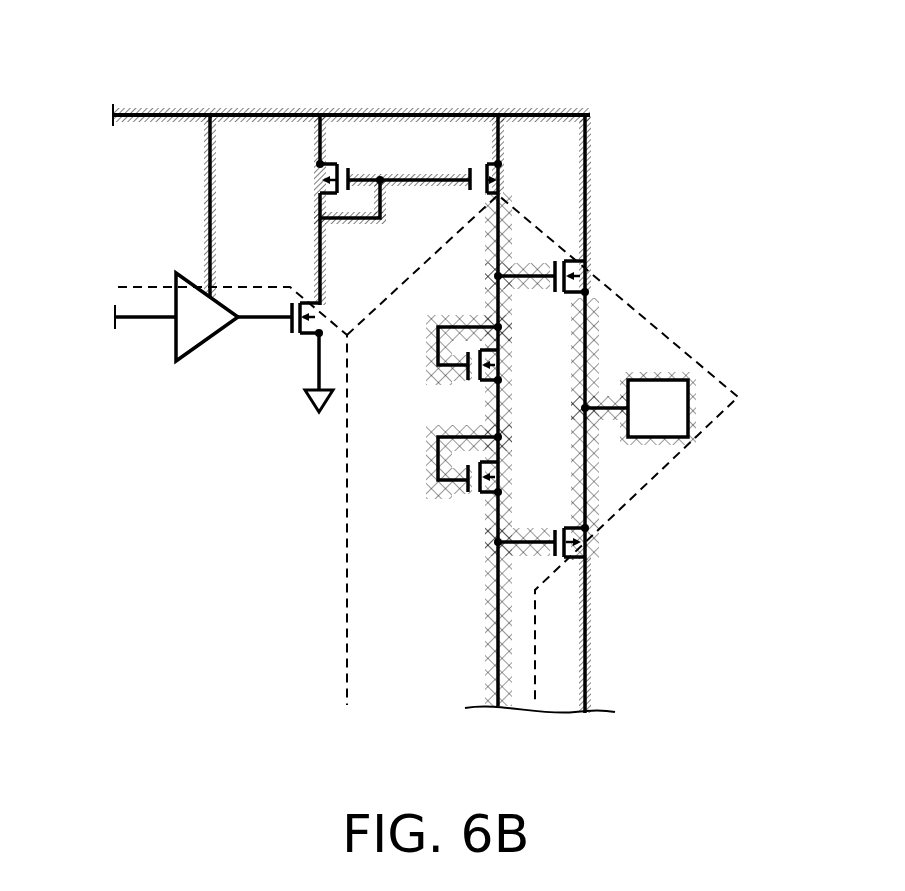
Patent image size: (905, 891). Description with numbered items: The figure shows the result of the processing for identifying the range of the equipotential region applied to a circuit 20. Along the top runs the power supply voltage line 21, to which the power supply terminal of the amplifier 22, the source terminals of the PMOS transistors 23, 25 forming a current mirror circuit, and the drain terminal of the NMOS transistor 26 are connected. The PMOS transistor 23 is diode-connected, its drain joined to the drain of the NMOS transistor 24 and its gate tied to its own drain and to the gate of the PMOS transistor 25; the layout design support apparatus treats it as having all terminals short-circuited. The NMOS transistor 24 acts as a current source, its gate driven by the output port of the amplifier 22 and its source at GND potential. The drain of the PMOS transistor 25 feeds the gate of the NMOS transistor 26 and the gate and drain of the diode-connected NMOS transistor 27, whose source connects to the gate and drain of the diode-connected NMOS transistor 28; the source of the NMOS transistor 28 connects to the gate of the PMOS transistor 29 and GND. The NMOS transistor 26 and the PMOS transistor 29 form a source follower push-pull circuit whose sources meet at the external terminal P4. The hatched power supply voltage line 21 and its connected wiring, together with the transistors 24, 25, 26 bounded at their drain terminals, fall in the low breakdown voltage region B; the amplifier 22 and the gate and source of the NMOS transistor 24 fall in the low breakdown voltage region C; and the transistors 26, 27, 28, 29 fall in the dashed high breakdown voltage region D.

The circuit 20 is at (668, 52).
The power supply voltage line 21 is at (275, 112).
The amplifier 22 is at (175, 273).
The PMOS transistor 23 is at (323, 162).
The NMOS transistor 24 is at (291, 305).
The PMOS transistor 25 is at (496, 162).
The NMOS transistor 26 is at (593, 273).
The NMOS transistor 27 is at (503, 357).
The NMOS transistor 28 is at (503, 468).
The PMOS transistor 29 is at (590, 548).
The low breakdown voltage region B is at (611, 161).
The low breakdown voltage region C is at (175, 390).
The high breakdown voltage region D is at (677, 361).
The external terminal P4 is at (690, 432).